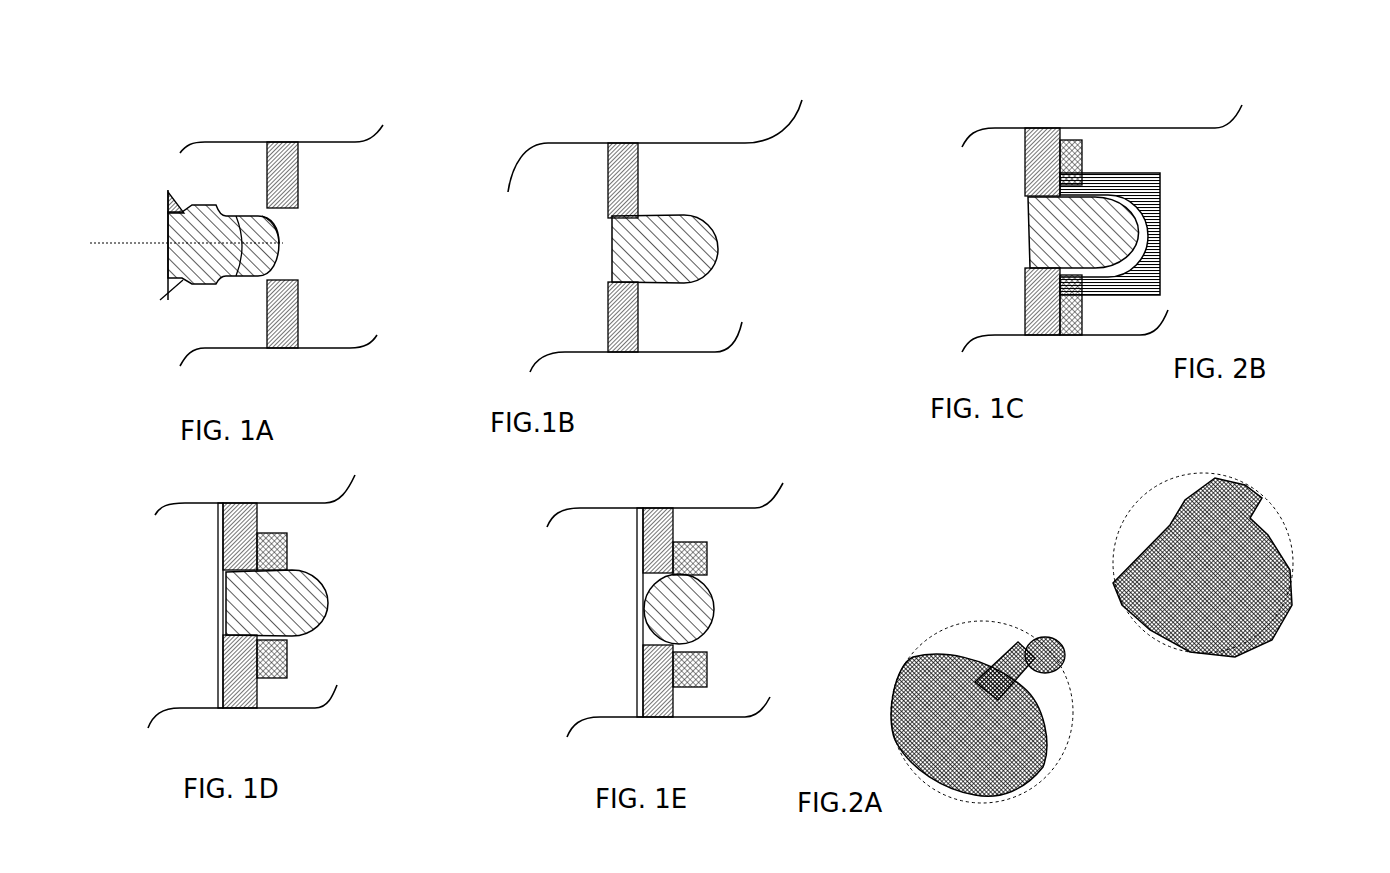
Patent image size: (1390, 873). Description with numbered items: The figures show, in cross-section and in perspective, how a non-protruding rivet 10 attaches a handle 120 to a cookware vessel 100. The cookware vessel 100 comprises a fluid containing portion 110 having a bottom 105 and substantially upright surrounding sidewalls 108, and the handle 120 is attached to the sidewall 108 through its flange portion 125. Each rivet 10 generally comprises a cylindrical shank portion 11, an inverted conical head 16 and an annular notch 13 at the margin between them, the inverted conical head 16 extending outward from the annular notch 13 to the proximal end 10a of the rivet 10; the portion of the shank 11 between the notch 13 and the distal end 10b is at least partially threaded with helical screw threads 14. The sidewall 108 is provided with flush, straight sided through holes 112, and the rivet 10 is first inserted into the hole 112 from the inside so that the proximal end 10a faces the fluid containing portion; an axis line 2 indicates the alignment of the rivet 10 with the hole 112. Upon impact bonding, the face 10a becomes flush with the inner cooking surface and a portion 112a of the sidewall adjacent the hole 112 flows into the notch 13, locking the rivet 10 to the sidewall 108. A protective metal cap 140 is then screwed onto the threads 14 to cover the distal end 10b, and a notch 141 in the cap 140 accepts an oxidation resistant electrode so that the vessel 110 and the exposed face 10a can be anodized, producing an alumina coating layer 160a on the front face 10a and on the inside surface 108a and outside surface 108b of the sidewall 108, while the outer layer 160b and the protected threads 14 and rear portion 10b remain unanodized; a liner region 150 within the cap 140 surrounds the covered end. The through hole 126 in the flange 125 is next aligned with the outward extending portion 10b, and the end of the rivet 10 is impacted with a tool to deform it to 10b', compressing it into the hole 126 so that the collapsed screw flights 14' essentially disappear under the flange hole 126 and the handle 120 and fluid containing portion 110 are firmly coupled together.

In FIG. 1A, the central axis 2 is at (105, 243).
In FIG. 1A, the rivet 10 is at (157, 220).
In FIG. 1A, the proximal end 10a is at (165, 243).
In FIG. 2A, the proximal end 10a is at (953, 683).
In FIG. 1A, the distal end 10b is at (362, 262).
In FIG. 1B, the distal end 10b is at (712, 233).
In FIG. 1D, the distal end 10b is at (340, 603).
In FIG. 1E, the deformed rivet end 10b' is at (748, 609).
In FIG. 2B, the deformed rivet end 10b' is at (1156, 643).
In FIG. 1A, the cylindrical shank portion 11 is at (222, 278).
In FIG. 1A, the annular notch 13 is at (187, 195).
In FIG. 1A, the helical screw threads 14 is at (224, 137).
In FIG. 1D, the helical screw threads 14 is at (335, 566).
In FIG. 1E, the collapsed screw flights 14' is at (743, 559).
In FIG. 1A, the inverted conical head 16 is at (244, 334).
In FIG. 1B, the inverted conical head 16 is at (598, 247).
In FIG. 1C, the inverted conical head 16 is at (1023, 233).
In FIG. 2A, the cookware vessel 100 is at (985, 600).
In FIG. 2B, the cookware vessel 100 is at (1255, 478).
In FIG. 2B, the bottom 105 is at (1247, 647).
In FIG. 1A, the sidewall 108 is at (313, 180).
In FIG. 1C, the sidewall 108 is at (1023, 163).
In FIG. 2A, the sidewall 108 is at (900, 700).
In FIG. 1D, the inside surface 108a is at (212, 538).
In FIG. 1D, the outside surface 108b is at (260, 518).
In FIG. 2A, the fluid containing portion 110 is at (1050, 743).
In FIG. 1A, the through hole 112 is at (297, 243).
In FIG. 1B, the sidewall portion adjacent the hole 112a is at (643, 188).
In FIG. 2A, the handle 120 is at (1030, 642).
In FIG. 2B, the handle 120 is at (1190, 497).
In FIG. 1D, the flange portion 125 is at (288, 552).
In FIG. 1E, the flange portion 125 is at (710, 672).
In FIG. 2A, the flange portion 125 is at (1020, 692).
In FIG. 2B, the flange portion 125 is at (1280, 555).
In FIG. 1D, the through hole in handle flange 126 is at (290, 647).
In FIG. 1C, the protective metal cap 140 is at (1160, 178).
In FIG. 1C, the notch 141 is at (1105, 172).
In FIG. 1C, the liner 150 is at (1072, 160).
In FIG. 1D, the alumina coating layer 160a is at (213, 620).
In FIG. 1E, the alumina coating layer 160a is at (635, 587).
In FIG. 1E, the second surface 160b is at (710, 610).